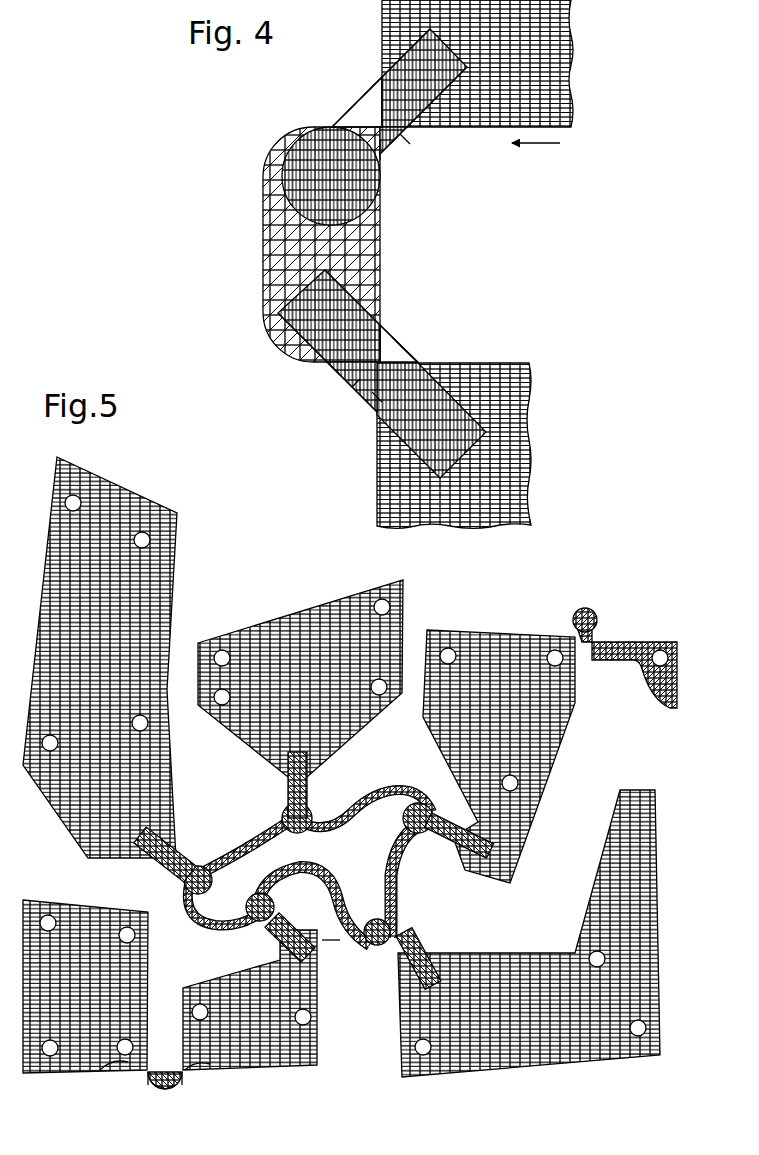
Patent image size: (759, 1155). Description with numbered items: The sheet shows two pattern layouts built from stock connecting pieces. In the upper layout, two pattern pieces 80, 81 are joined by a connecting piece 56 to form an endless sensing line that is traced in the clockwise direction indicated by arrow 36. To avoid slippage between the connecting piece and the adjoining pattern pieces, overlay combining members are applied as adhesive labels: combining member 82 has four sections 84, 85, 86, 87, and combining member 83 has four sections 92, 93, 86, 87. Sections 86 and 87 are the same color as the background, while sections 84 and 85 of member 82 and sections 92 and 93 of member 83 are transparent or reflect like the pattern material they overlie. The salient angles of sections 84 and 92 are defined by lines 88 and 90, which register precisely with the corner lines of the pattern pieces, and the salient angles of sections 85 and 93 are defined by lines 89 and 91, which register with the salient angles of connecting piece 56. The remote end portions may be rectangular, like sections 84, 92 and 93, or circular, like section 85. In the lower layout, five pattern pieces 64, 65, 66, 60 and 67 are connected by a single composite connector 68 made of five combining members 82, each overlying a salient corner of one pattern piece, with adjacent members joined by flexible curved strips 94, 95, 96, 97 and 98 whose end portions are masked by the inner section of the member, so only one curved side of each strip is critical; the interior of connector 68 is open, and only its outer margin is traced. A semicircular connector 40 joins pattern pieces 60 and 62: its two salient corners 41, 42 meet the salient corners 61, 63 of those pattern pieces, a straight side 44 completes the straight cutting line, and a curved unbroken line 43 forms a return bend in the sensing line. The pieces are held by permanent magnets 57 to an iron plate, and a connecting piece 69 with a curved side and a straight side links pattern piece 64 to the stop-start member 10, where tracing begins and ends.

In FIG. 4, the pattern piece 80 is at (570, 32).
In FIG. 4, the pattern piece 81 is at (527, 470).
In FIG. 4, the combining member 82 is at (358, 90).
In FIG. 5, the combining member 82 is at (315, 797).
In FIG. 4, the combining member 83 is at (414, 343).
In FIG. 4, the section of combining member 84 is at (412, 81).
In FIG. 4, the section of combining member 85 is at (315, 190).
In FIG. 5, the section of combining member 85 is at (220, 883).
In FIG. 4, the section of combining member 86 is at (366, 100).
In FIG. 4, the section of combining member 87 is at (397, 138).
In FIG. 4, the line 88 is at (407, 140).
In FIG. 4, the line 89 is at (390, 146).
In FIG. 4, the line 90 is at (370, 93).
In FIG. 4, the line 91 is at (351, 118).
In FIG. 4, the section of combining member 92 is at (427, 450).
In FIG. 4, the section of combining member 93 is at (302, 320).
In FIG. 4, the connecting piece 56 is at (268, 263).
In FIG. 4, the arrow 36 is at (560, 143).
In FIG. 5, the permanent magnets 57 is at (136, 533).
In FIG. 5, the pattern piece 60 is at (237, 1037).
In FIG. 5, the pattern piece 62 is at (70, 1008).
In FIG. 5, the pattern piece 64 is at (487, 711).
In FIG. 5, the pattern piece 65 is at (283, 674).
In FIG. 5, the pattern piece 66 is at (80, 640).
In FIG. 5, the pattern piece 67 is at (540, 1013).
In FIG. 5, the connecting piece 69 is at (590, 610).
In FIG. 5, the starting member 10 is at (662, 702).
In FIG. 5, the curved strip 94 is at (403, 787).
In FIG. 5, the curved strip 95 is at (238, 843).
In FIG. 5, the curved strip 96 is at (197, 917).
In FIG. 5, the curved strip 97 is at (337, 867).
In FIG. 5, the curved strip 98 is at (398, 890).
In FIG. 5, the composite connector 68 is at (330, 937).
In FIG. 5, the straight side 44 is at (165, 1068).
In FIG. 5, the connector 40 is at (157, 1093).
In FIG. 5, the salient corner 41 is at (182, 1082).
In FIG. 5, the salient corner 42 is at (148, 1080).
In FIG. 5, the curved unbroken line 43 is at (167, 1093).
In FIG. 5, the salient corner 61 is at (203, 1070).
In FIG. 5, the salient corner 63 is at (103, 1062).